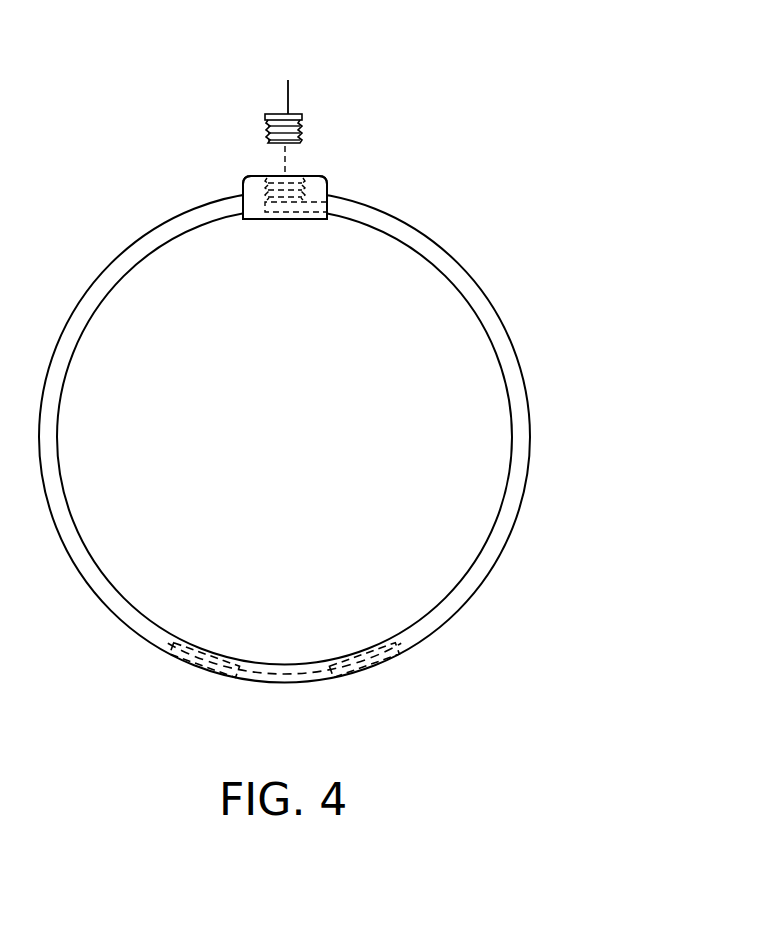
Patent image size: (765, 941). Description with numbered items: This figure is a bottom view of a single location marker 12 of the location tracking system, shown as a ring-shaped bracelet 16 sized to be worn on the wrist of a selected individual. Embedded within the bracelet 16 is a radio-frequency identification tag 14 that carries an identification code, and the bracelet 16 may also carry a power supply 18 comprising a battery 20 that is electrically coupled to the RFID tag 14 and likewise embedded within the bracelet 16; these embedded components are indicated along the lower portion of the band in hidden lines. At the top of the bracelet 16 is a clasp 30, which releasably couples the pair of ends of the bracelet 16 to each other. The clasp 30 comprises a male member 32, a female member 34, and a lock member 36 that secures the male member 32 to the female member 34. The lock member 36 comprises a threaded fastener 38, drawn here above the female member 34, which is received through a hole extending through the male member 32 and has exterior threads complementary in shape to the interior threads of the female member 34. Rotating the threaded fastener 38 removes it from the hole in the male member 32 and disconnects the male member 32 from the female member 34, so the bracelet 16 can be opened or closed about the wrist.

The location marker 12 is at (486, 238).
The radio-frequency identification (RFID) tag 14 is at (200, 661).
The bracelet 16 is at (515, 428).
The power supply 18 is at (375, 672).
The battery 20 is at (377, 663).
The clasp 30 is at (326, 172).
The male member 32 is at (292, 207).
The female member 34 is at (258, 190).
The lock member 36 is at (265, 107).
The threaded fastener 38 is at (288, 80).